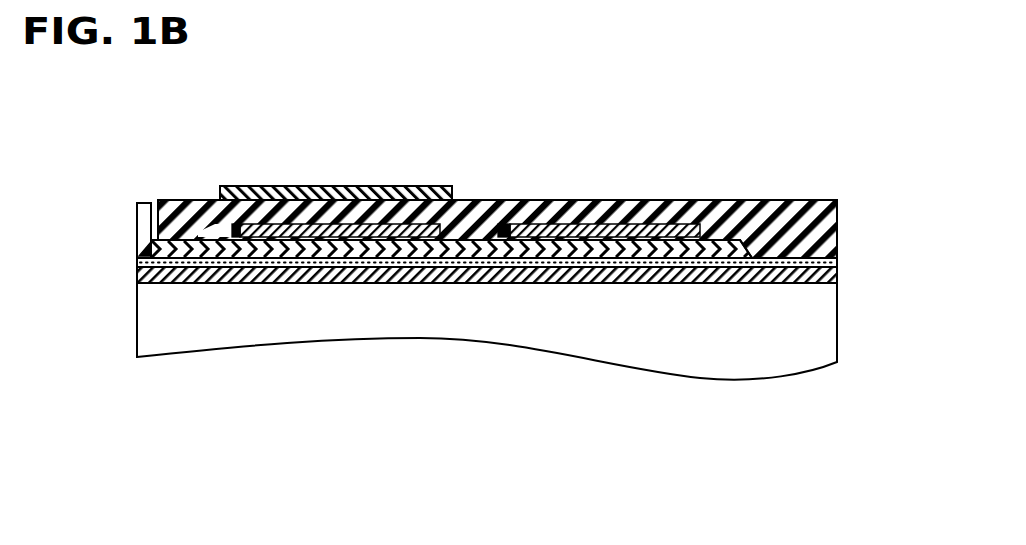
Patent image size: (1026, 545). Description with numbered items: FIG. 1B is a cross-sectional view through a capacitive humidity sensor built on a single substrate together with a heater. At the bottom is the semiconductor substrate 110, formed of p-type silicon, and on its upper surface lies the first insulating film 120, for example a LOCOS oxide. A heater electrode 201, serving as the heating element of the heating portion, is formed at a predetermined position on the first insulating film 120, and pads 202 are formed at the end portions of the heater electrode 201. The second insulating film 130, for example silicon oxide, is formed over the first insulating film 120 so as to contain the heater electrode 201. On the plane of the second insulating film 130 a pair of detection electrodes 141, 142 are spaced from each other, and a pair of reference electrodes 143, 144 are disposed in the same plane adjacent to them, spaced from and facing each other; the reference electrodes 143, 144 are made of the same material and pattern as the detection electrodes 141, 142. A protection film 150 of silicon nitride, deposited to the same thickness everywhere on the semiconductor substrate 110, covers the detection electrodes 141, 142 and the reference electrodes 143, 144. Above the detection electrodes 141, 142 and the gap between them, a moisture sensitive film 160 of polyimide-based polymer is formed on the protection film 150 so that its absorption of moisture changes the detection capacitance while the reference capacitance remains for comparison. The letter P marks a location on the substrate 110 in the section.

The semiconductor substrate 110 is at (806, 318).
The first insulating film 120 is at (838, 276).
The second insulating film 130 is at (840, 259).
The detection electrode 141 is at (232, 229).
The detection electrode 142 is at (432, 231).
The reference electrode 143 is at (502, 226).
The reference electrode 144 is at (636, 226).
The protection film 150 is at (840, 222).
The moisture sensitive film 160 is at (306, 186).
The heater electrode 201 is at (503, 267).
The pad 202 is at (150, 284).
The pixel region P is at (797, 350).